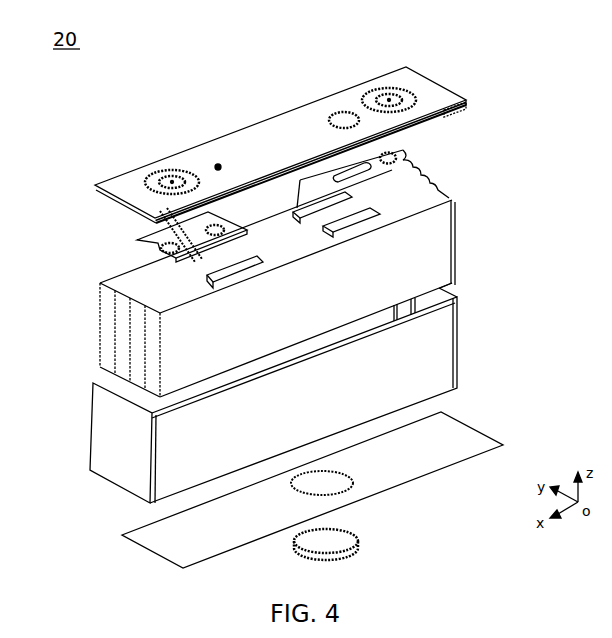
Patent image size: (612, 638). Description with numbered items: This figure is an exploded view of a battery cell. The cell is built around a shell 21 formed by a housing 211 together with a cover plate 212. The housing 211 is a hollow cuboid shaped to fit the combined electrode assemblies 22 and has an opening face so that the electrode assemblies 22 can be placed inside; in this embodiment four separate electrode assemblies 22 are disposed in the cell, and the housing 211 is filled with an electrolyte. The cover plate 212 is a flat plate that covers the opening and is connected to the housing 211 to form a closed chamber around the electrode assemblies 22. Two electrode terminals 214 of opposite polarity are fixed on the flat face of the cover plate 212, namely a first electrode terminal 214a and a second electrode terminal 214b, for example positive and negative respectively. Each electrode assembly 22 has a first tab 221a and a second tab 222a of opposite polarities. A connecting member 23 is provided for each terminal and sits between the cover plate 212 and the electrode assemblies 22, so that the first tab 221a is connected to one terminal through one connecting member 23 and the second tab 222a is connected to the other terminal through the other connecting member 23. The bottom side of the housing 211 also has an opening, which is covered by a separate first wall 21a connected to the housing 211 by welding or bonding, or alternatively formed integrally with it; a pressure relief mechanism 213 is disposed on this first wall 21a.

The shell 21 is at (112, 410).
The first wall 21a is at (473, 428).
The housing 211 is at (424, 360).
The cover plate 212 is at (278, 132).
The pressure relief mechanism 213 is at (339, 537).
The electrode terminals 214 is at (229, 117).
The first electrode terminal 214a is at (168, 174).
The second electrode terminal 214b is at (358, 81).
The electrode assembly 22 is at (305, 197).
The first tab 221a is at (197, 272).
The second tab 222a is at (352, 237).
The connecting member 23 is at (406, 157).